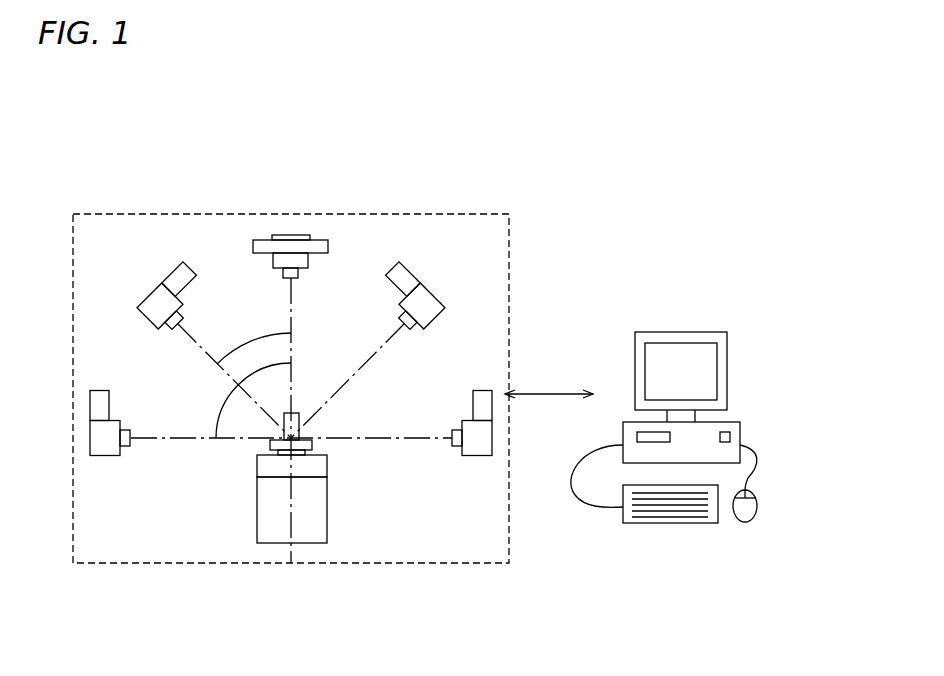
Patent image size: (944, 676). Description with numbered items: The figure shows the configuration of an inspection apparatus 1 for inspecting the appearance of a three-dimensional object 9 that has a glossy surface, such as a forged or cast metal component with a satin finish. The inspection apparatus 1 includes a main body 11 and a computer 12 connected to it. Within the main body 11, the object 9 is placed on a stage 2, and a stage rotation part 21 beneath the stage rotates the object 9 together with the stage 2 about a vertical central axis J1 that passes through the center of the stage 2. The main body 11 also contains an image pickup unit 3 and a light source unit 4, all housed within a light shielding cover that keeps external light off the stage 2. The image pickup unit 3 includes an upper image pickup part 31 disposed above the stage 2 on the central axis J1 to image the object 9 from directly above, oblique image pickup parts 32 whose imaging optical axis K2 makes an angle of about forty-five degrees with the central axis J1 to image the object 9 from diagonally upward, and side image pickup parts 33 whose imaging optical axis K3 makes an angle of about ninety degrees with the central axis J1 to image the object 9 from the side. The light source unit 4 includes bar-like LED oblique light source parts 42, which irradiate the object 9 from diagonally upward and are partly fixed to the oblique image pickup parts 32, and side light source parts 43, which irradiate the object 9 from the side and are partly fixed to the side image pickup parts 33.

The inspection apparatus 1 is at (562, 130).
The stage 2 is at (263, 467).
The image pickup unit 3 is at (173, 152).
The light source unit 4 is at (409, 152).
The object 9 is at (313, 445).
The main body 11 is at (217, 567).
The computer 12 is at (670, 552).
The stage rotation part 21 is at (265, 510).
The upper image pickup part 31 is at (290, 258).
The oblique image pickup part 32 is at (160, 297).
The side image pickup part 33 is at (102, 430).
The oblique light source part 42 is at (393, 280).
The side light source part 43 is at (480, 402).
The imaging optical axis K2 is at (203, 356).
The imaging optical axis K3 is at (192, 440).
The central axis J1 is at (298, 555).